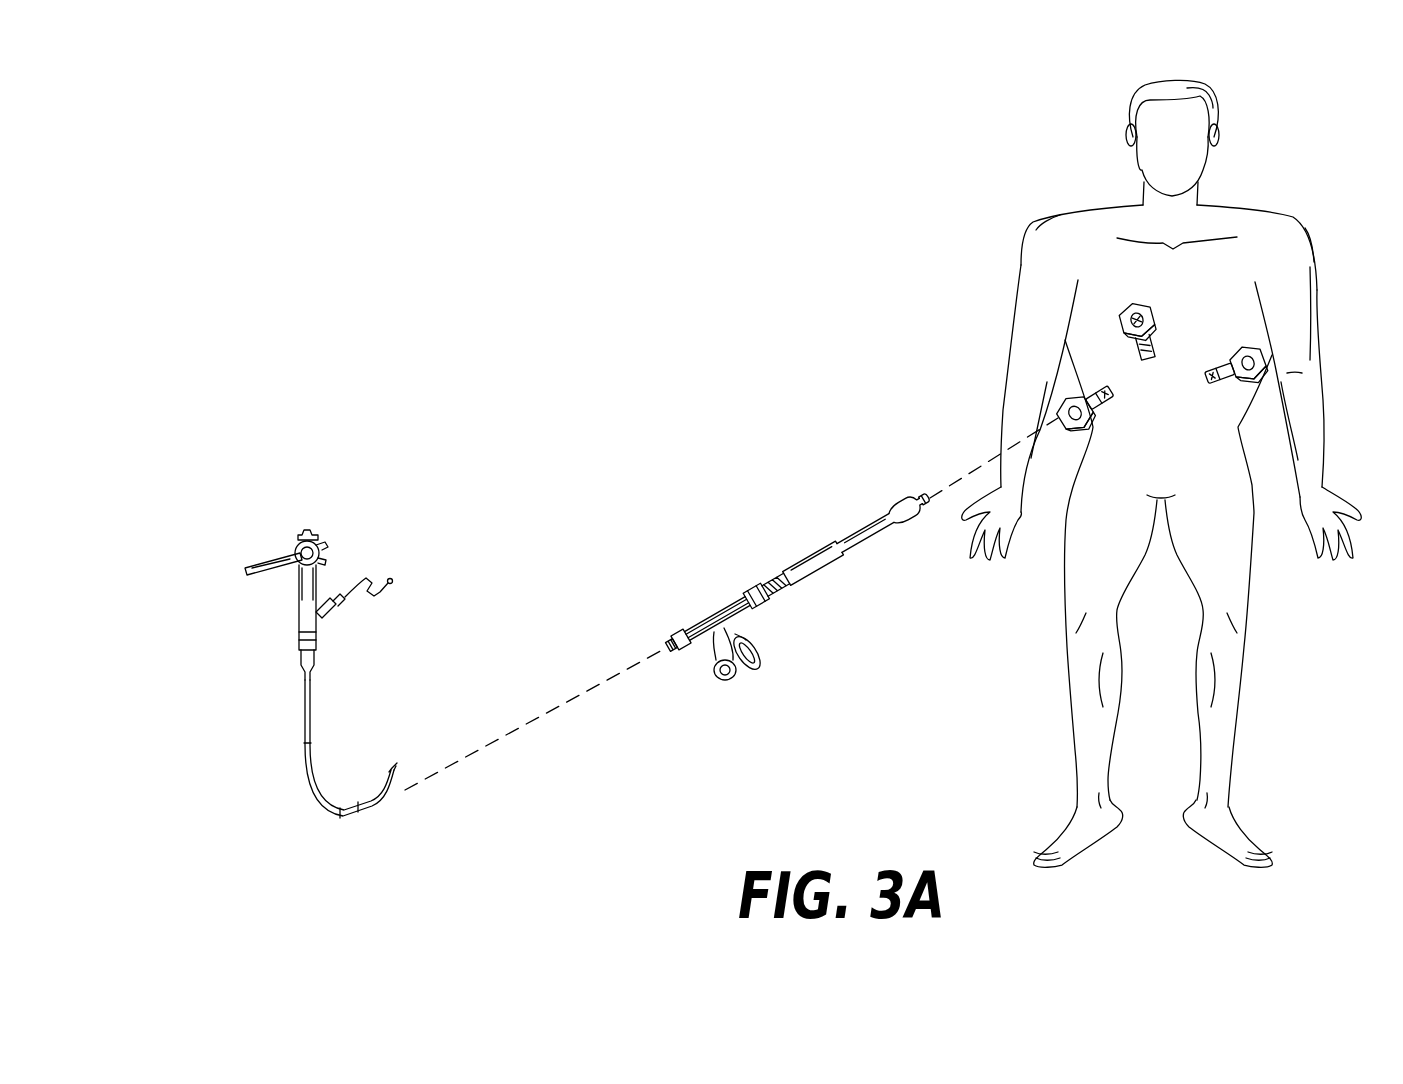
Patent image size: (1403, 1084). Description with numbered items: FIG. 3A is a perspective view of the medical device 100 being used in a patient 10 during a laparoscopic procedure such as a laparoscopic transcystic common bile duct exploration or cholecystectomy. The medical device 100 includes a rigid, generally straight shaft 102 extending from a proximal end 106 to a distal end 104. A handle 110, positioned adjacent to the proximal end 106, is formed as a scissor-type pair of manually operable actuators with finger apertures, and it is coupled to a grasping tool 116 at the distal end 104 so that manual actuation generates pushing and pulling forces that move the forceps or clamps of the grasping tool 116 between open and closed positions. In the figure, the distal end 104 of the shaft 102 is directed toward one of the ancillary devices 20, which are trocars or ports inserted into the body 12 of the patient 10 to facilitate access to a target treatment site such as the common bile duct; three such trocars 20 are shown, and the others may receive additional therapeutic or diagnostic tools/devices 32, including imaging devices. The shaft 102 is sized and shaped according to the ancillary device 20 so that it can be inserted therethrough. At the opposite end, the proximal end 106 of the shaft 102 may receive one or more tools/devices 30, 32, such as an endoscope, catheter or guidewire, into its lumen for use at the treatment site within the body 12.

The patient 10 is at (1078, 152).
The body 12 is at (1213, 252).
The ancillary devices 20 is at (1152, 373).
The tool/device 30 is at (278, 520).
The tool/device 32 is at (370, 562).
The medical device 100 is at (752, 540).
The shaft 102 is at (851, 542).
The distal end 104 is at (904, 535).
The proximal end 106 is at (693, 610).
The handle 110 is at (722, 692).
The grasping tool 116 is at (924, 490).